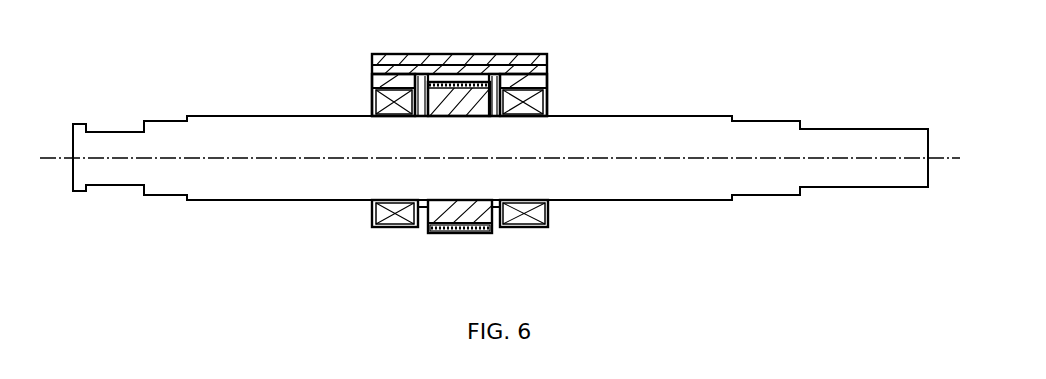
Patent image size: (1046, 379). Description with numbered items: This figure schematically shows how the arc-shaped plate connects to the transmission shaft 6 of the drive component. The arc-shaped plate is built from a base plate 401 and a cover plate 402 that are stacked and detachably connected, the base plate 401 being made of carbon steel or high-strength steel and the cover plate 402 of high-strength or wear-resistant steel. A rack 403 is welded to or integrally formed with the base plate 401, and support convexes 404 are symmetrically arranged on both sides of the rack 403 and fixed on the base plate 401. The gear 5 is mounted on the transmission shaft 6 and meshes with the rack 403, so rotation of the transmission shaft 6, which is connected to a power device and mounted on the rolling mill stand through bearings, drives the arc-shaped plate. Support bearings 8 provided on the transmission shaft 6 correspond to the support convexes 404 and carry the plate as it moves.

The transmission shaft 6 is at (650, 133).
The gear 5 is at (372, 67).
The support bearing 8 is at (375, 100).
The base plate 401 is at (508, 72).
The cover plate 402 is at (477, 58).
The rack 403 is at (440, 78).
The support convex 404 is at (520, 82).